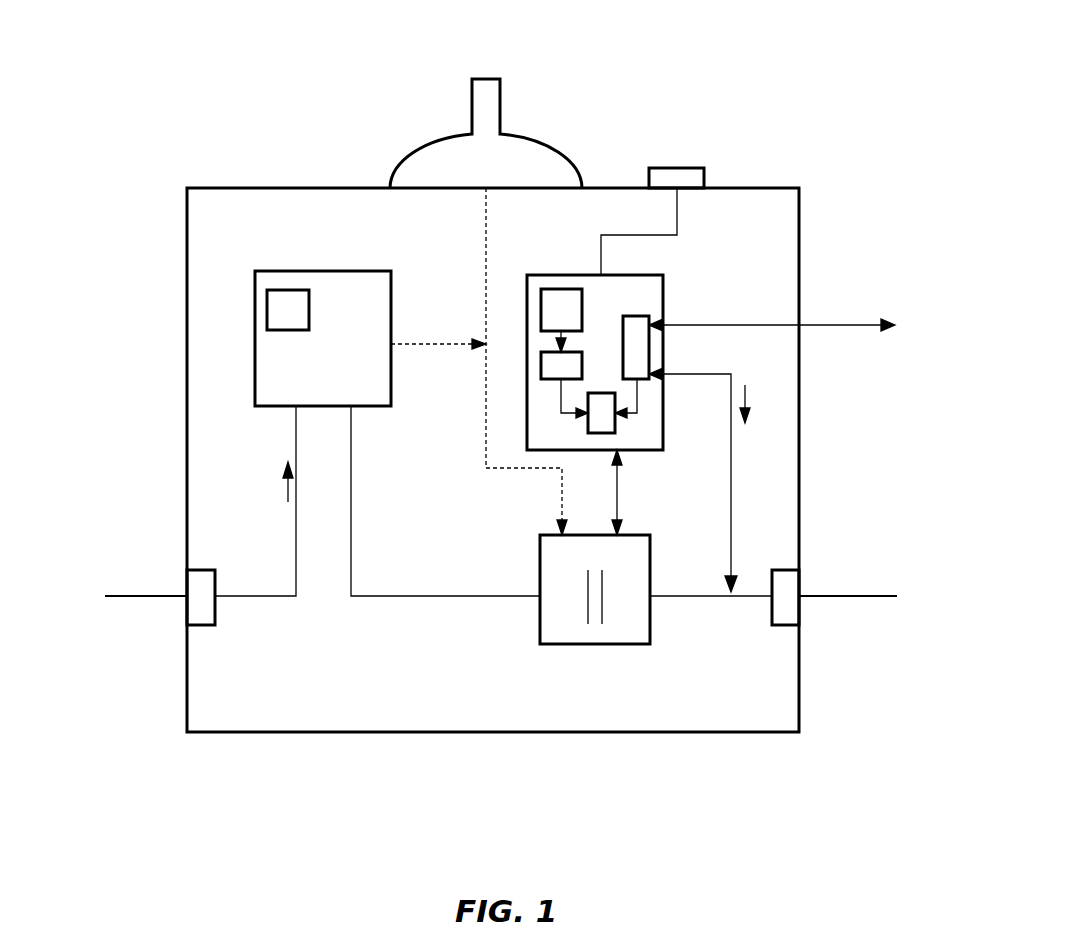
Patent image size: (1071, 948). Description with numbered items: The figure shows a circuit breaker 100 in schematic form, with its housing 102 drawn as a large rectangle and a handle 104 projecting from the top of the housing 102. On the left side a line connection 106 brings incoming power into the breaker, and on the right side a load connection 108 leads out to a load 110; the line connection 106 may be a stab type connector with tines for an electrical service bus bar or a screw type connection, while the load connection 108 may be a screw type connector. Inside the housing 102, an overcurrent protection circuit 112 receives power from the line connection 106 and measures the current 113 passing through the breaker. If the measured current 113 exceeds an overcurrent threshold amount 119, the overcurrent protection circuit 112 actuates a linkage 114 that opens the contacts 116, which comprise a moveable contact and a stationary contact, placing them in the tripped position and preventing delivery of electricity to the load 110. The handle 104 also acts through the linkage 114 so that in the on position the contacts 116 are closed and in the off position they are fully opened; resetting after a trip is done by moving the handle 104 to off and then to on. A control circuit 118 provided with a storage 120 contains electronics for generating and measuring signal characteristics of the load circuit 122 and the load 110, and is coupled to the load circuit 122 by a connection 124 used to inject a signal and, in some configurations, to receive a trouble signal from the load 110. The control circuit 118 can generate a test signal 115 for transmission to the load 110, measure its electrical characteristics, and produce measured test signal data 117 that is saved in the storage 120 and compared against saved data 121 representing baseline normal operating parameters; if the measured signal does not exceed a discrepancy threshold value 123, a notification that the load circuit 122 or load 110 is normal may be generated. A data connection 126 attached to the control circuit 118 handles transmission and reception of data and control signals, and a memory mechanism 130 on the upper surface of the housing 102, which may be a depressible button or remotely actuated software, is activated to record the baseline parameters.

The circuit breaker 100 is at (848, 120).
The housing 102 is at (187, 222).
The handle 104 is at (430, 135).
The line connection 106 is at (215, 615).
The load connection 108 is at (772, 615).
The load 110 is at (936, 609).
The overcurrent protection circuit 112 is at (255, 358).
The current 113 is at (288, 490).
The linkage 114 is at (486, 240).
The test signal 115 is at (745, 385).
The contacts 116 is at (540, 572).
The measured test signal data 117 is at (632, 316).
The control circuit 118 is at (663, 295).
The overcurrent threshold amount 119 is at (276, 290).
The storage 120 is at (548, 289).
The saved data 121 is at (547, 379).
The load circuit 122 is at (800, 596).
The discrepancy threshold value 123 is at (615, 420).
The connection 124 is at (731, 455).
The data connection 126 is at (834, 325).
The memory mechanism 130 is at (677, 168).